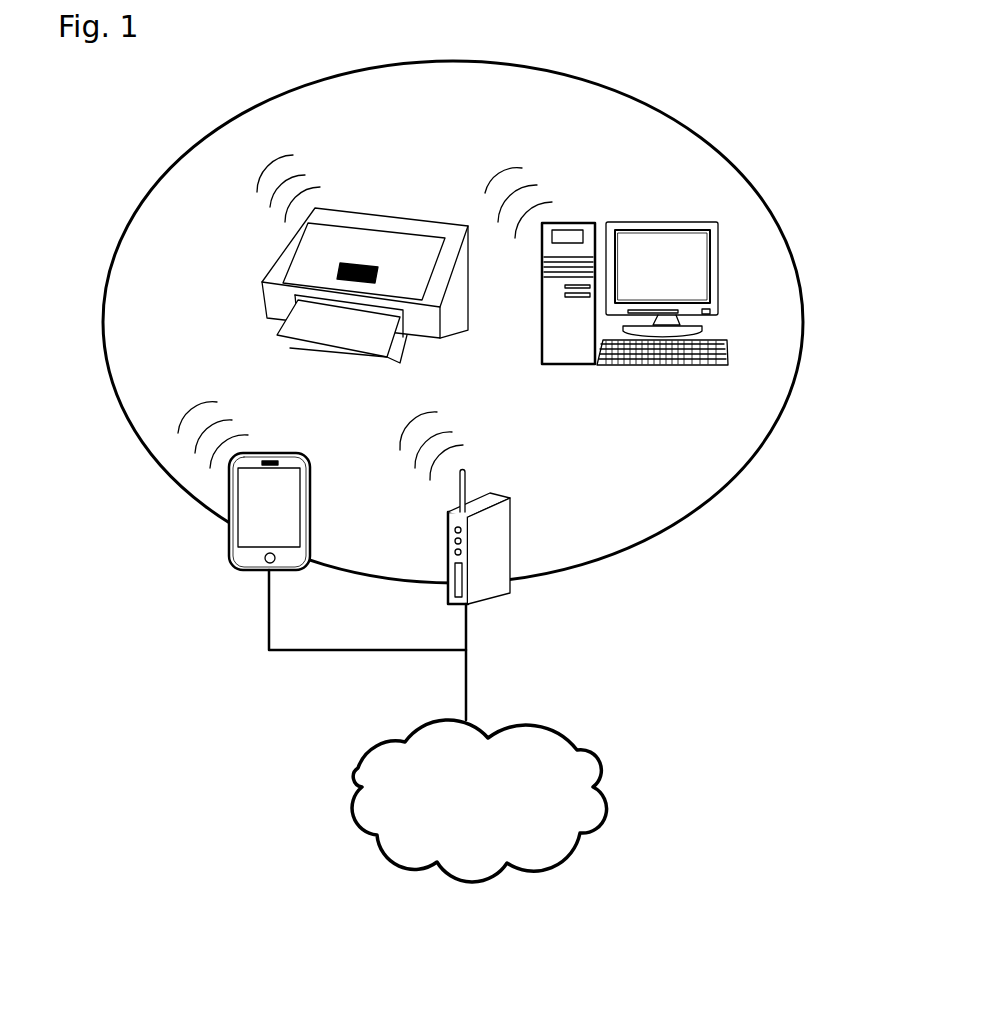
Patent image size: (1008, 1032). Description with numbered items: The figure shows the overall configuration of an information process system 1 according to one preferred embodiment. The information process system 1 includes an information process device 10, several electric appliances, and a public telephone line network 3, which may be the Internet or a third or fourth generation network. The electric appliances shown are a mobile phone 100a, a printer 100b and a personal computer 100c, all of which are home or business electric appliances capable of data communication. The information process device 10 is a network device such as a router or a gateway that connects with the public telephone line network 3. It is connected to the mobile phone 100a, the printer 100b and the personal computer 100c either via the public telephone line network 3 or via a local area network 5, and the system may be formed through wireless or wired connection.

The information process system 1 is at (713, 79).
The local area network 5 is at (650, 123).
The mobile phone 100a is at (283, 460).
The printer 100b is at (362, 222).
The personal computer 100c is at (670, 230).
The information process device 10 is at (493, 500).
The public telephone line network 3 is at (543, 742).